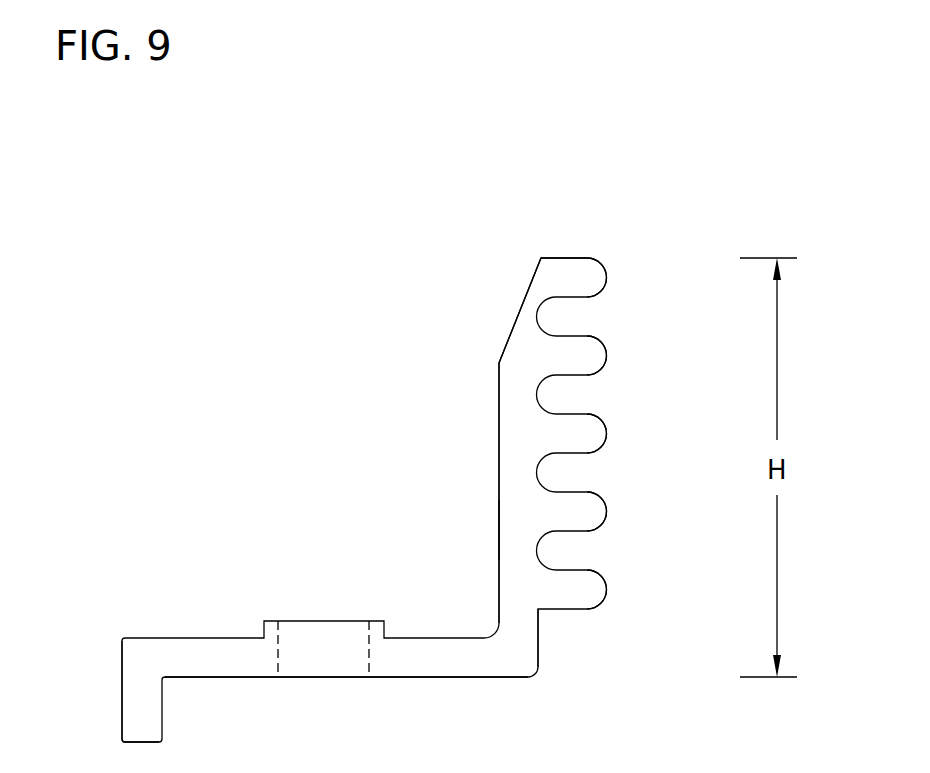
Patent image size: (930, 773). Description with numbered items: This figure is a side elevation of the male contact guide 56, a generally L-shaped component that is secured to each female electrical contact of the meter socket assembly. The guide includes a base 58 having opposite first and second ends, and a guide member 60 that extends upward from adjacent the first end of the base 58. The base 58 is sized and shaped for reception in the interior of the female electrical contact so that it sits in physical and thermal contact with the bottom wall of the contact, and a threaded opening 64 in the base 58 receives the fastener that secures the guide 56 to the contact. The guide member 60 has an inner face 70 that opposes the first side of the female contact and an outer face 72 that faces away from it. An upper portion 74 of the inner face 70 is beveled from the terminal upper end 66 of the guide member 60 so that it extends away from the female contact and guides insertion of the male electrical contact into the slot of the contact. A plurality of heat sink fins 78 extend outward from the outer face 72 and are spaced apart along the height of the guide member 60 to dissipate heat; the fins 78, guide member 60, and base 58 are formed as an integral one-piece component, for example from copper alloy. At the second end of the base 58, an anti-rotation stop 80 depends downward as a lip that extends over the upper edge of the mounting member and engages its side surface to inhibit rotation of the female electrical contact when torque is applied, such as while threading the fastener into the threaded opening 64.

The male contact guide 56 is at (546, 689).
The base 58 is at (413, 658).
The guide member 60 is at (508, 456).
The threaded opening 64 is at (278, 658).
The terminal (upper) end 66 is at (553, 258).
The inner face 70 is at (498, 535).
The outer face 72 is at (538, 637).
The upper portion 74 is at (520, 312).
The heat sink fins 78 is at (590, 281).
The anti-rotation stop 80 is at (141, 716).